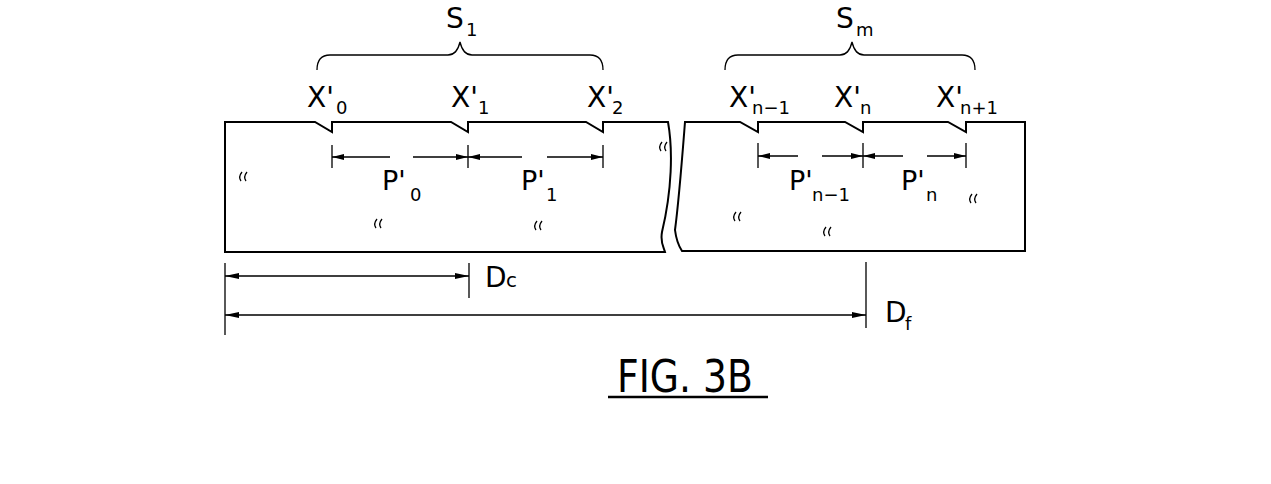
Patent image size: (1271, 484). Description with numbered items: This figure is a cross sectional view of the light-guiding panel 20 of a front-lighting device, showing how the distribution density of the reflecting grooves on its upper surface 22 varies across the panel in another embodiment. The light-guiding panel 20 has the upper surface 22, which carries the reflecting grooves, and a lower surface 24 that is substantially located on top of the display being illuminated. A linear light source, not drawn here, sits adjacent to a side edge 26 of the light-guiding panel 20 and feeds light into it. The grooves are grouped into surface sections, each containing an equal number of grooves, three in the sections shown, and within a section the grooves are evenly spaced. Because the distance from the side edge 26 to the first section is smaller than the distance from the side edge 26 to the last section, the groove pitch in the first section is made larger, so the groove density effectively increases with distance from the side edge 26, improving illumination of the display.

The light-guiding panel 20 is at (694, 184).
The upper surface 22 is at (1045, 126).
The lower surface 24 is at (1045, 237).
The side edge 26 is at (247, 203).